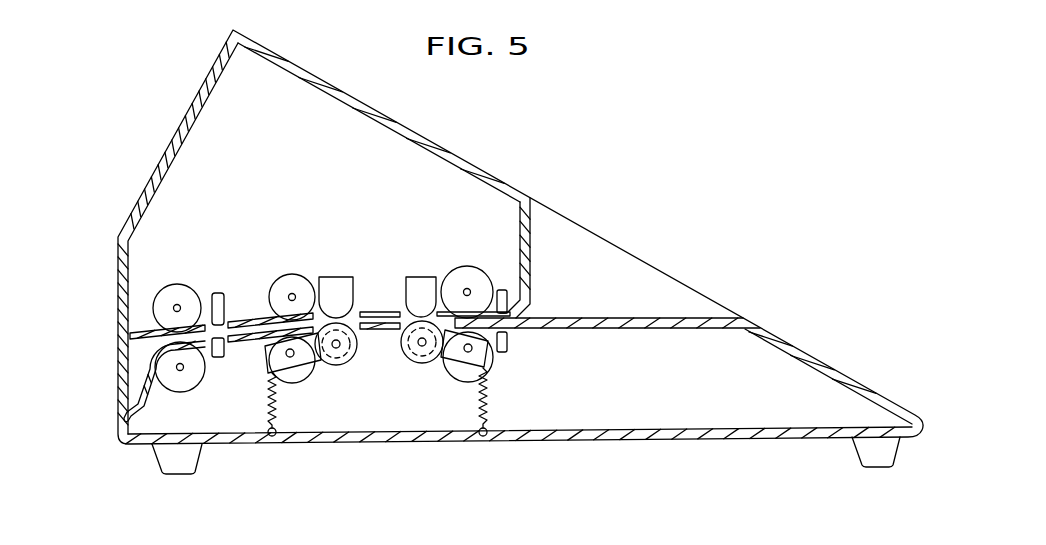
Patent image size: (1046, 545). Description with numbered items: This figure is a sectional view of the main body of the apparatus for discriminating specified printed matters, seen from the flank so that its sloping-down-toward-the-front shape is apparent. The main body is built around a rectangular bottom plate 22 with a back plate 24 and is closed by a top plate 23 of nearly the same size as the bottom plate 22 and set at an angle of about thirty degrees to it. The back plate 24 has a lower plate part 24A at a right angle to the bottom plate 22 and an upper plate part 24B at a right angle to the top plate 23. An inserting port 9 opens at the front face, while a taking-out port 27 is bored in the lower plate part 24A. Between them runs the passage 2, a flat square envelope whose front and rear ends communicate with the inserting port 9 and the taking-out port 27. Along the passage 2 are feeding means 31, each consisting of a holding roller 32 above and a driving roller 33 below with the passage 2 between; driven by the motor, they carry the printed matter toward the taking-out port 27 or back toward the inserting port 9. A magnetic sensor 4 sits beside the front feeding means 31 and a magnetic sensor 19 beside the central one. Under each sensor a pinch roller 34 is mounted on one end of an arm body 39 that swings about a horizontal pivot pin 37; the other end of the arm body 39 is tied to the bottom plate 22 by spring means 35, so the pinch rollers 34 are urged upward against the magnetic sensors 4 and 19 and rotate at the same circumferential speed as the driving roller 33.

The passage 2 is at (386, 330).
The magnetic sensor 4 is at (422, 277).
The inserting port 9 is at (525, 312).
The magnetic sensor 19 is at (333, 277).
The bottom plate 22 is at (597, 443).
The top plate 23 is at (490, 172).
The back plate 24 is at (120, 113).
The lower plate part 24A is at (119, 250).
The upper plate part 24B is at (153, 181).
The taking-out port 27 is at (137, 355).
The feeding means 31 is at (472, 259).
The holding roller 32 is at (172, 285).
The driving roller 33 is at (196, 365).
The pinch roller 34 is at (338, 366).
The spring means 35 is at (269, 398).
The horizontal pivot pin 37 is at (290, 358).
The arm body 39 is at (306, 357).